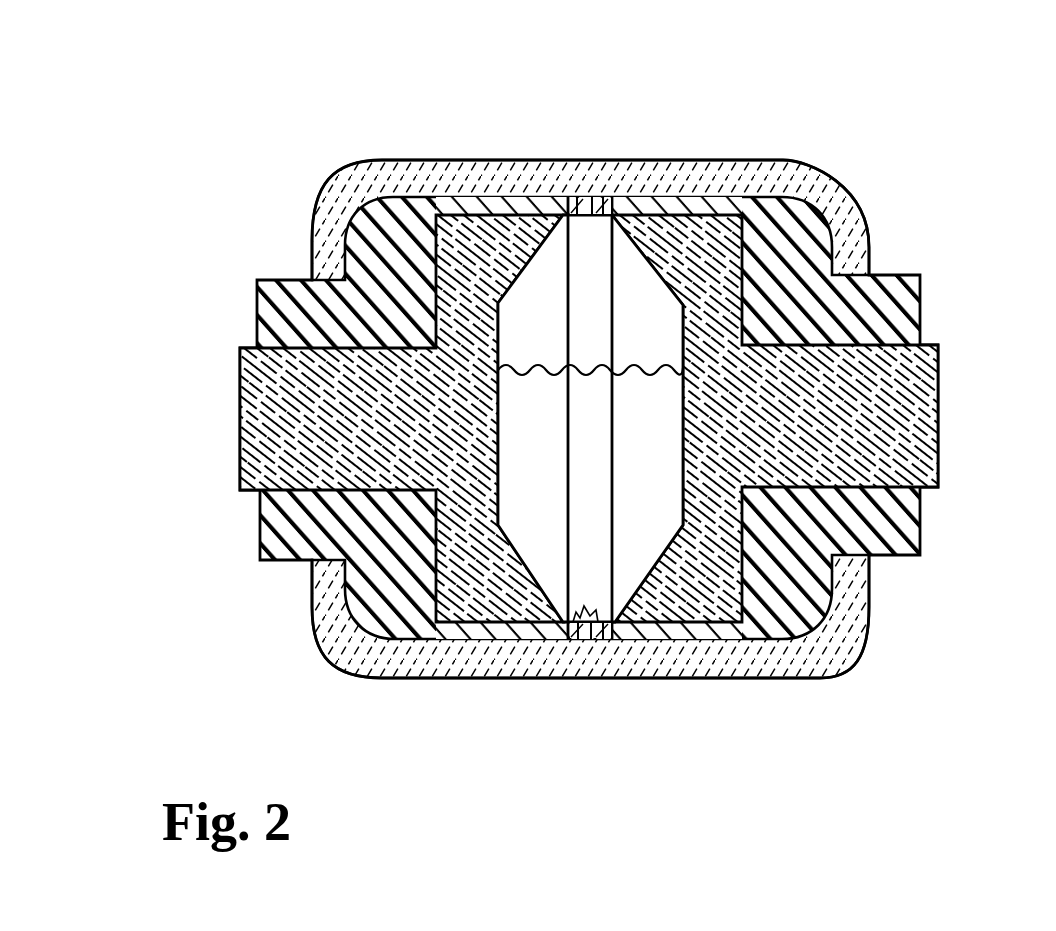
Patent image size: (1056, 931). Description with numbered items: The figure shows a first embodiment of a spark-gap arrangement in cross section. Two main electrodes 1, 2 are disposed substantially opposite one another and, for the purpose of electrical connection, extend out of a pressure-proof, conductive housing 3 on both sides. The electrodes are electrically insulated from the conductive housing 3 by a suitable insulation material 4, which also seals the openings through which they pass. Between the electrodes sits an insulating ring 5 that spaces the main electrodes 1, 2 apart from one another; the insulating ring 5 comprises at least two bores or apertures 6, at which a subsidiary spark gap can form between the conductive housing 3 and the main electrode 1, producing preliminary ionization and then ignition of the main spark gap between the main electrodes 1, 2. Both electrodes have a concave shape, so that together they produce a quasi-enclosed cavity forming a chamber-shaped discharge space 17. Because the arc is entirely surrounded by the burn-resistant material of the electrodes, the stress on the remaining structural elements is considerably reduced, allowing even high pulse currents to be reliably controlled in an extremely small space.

The main electrode 1 is at (247, 392).
The main electrode 2 is at (923, 407).
The conductive housing 3 is at (700, 164).
The insulation material 4 is at (857, 303).
The insulating ring 5 is at (572, 220).
The bore or apertures 6 is at (606, 196).
The discharge space 17 is at (637, 483).